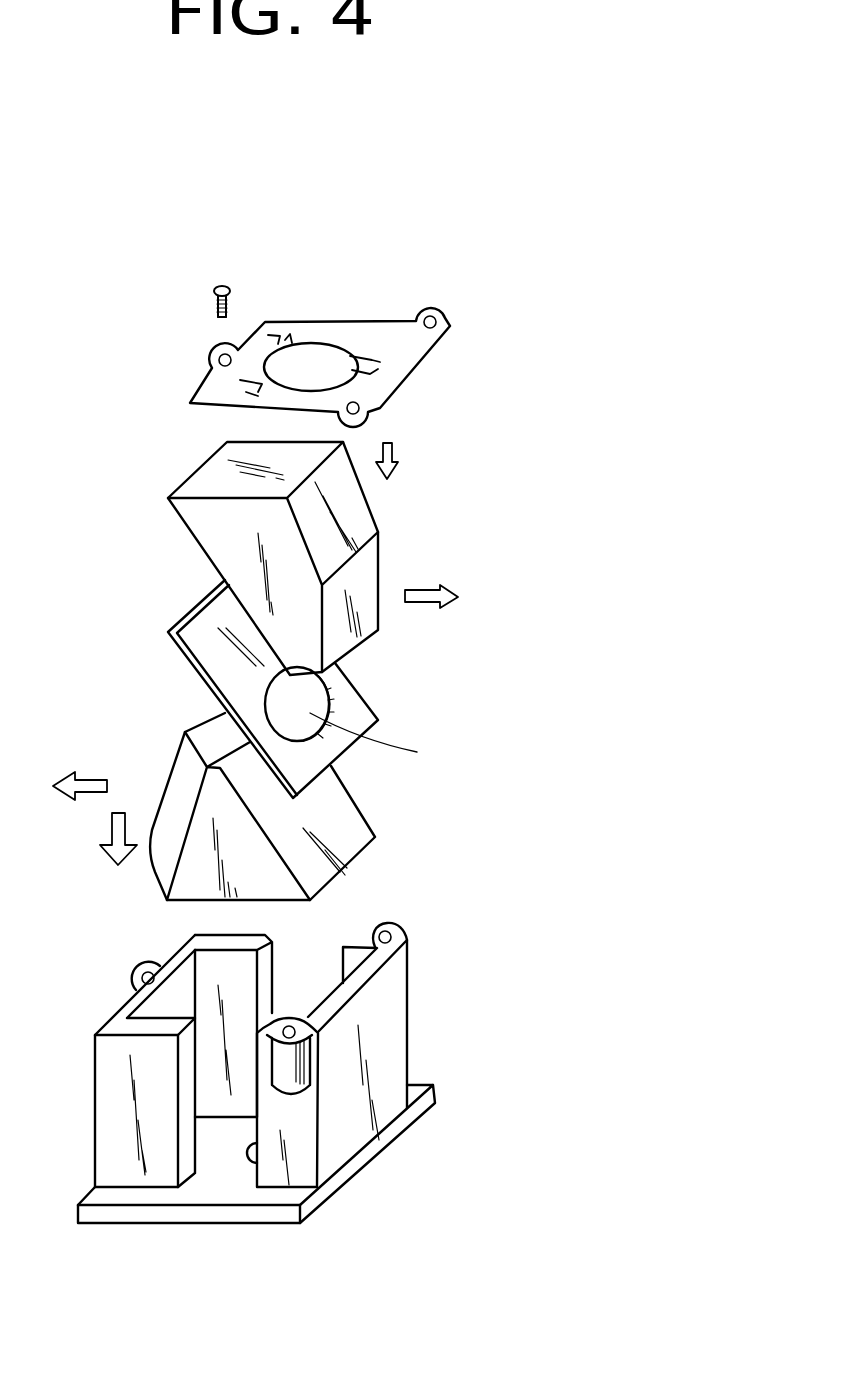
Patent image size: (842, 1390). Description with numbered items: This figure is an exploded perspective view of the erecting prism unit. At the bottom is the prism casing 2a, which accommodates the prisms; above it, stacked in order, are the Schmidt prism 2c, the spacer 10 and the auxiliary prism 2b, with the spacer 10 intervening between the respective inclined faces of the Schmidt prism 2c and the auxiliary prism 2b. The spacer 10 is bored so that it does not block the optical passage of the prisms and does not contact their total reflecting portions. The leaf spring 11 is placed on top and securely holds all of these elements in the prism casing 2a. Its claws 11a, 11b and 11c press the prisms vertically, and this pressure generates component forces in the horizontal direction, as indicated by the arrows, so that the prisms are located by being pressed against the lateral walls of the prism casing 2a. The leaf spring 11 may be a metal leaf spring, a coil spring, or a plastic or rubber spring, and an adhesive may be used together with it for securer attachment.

The prism casing 2a is at (398, 1012).
The auxiliary prism 2b is at (360, 512).
The Schmidt prism 2c is at (348, 820).
The spacer 10 is at (348, 692).
The leaf spring 11 is at (282, 310).
The claw 11a is at (352, 358).
The claw 11b is at (273, 338).
The claw 11c is at (197, 393).